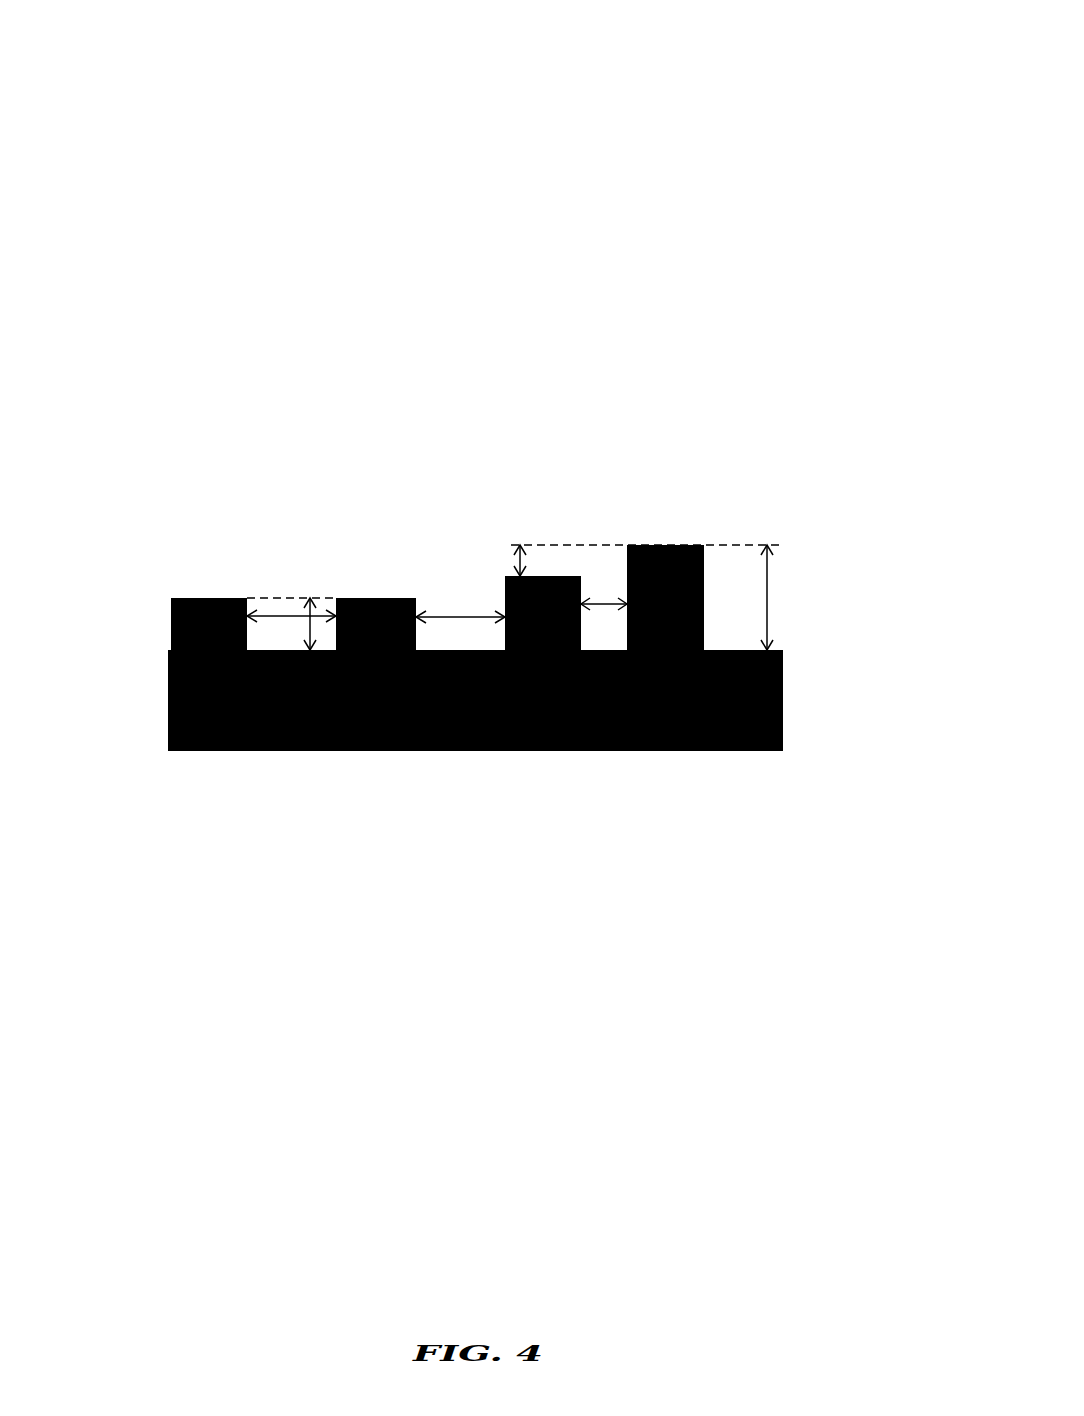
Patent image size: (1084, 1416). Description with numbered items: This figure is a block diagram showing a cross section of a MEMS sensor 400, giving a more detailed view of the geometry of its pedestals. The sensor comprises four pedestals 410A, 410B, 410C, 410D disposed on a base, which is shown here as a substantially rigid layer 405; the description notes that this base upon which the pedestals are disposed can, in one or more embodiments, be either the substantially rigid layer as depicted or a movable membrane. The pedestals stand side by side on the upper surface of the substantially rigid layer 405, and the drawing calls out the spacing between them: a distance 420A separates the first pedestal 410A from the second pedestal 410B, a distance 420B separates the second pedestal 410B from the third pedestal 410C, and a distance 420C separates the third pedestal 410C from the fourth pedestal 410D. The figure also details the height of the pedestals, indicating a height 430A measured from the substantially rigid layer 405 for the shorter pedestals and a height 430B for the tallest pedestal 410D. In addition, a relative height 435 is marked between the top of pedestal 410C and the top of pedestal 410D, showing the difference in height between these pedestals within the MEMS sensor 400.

The MEMS sensor 400 is at (128, 31).
The substantially rigid layer 405 is at (490, 667).
The pedestal 410A is at (183, 590).
The pedestal 410B is at (388, 628).
The pedestal 410C is at (547, 568).
The pedestal 410D is at (665, 538).
The distance between pedestals 420A is at (260, 605).
The distance between pedestals 420B is at (475, 605).
The distance between pedestals 420C is at (596, 592).
The height of pedestals 430A is at (298, 608).
The height of pedestals 430B is at (758, 593).
The relative height 435 is at (510, 552).